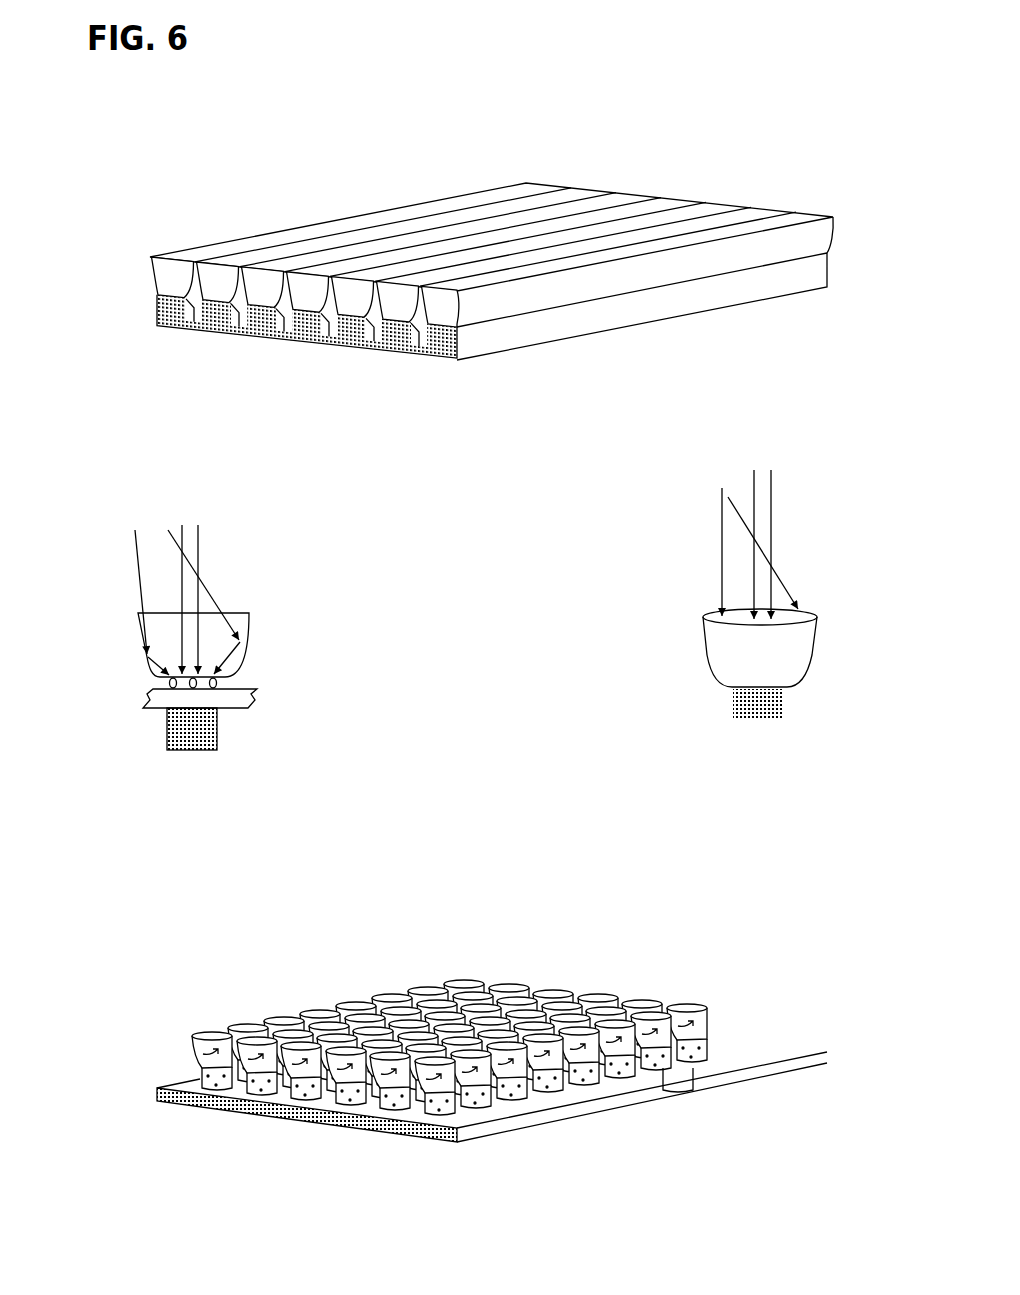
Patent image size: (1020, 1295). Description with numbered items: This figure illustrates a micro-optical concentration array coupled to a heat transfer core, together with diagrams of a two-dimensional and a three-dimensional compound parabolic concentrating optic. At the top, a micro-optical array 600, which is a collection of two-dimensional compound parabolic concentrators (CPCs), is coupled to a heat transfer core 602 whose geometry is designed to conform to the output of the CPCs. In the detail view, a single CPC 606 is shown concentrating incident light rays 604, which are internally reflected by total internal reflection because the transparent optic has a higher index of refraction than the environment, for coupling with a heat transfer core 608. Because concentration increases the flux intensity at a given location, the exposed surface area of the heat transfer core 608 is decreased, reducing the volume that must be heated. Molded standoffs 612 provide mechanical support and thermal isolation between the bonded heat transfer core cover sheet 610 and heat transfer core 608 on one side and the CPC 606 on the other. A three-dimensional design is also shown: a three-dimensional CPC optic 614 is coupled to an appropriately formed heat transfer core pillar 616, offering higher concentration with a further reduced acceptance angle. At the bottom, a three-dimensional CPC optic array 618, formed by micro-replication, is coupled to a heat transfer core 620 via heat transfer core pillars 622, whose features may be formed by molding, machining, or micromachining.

The micro-optical array 600 is at (148, 263).
The heat transfer core 602 is at (158, 317).
The incident light rays 604 is at (137, 552).
The CPC 606 is at (138, 632).
The heat transfer core 608 is at (167, 727).
The heat transfer core cover sheet 610 is at (153, 690).
The molded standoffs 612 is at (248, 676).
The 3D CPC optic 614 is at (697, 649).
The heat transfer core pillar 616 is at (717, 702).
The 3D CPC optic array 618 is at (183, 1053).
The heat transfer core 620 is at (518, 1130).
The heat transfer core pillars 622 is at (573, 1100).